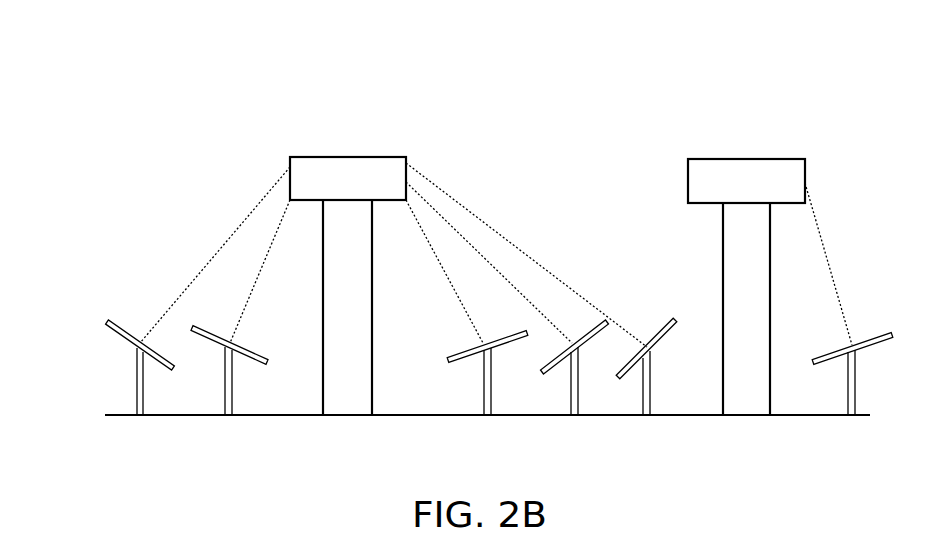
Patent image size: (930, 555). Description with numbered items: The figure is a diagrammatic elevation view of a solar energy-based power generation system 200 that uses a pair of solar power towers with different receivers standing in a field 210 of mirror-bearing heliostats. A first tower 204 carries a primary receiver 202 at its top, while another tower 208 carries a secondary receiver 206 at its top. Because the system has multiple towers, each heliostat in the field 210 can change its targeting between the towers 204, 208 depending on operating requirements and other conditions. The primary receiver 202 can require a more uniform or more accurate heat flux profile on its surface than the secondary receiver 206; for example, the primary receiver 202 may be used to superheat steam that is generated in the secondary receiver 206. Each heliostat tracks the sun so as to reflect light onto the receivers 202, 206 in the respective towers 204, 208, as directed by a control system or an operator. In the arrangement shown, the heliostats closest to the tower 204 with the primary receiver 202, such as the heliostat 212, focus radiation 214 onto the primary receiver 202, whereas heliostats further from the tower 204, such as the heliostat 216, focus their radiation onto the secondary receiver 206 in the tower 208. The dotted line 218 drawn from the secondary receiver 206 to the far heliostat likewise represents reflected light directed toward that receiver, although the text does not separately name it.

The solar energy-based power generation system 200 is at (205, 97).
The primary receiver 202 is at (369, 190).
The first tower 204 is at (374, 307).
The secondary receiver 206 is at (767, 192).
The tower 208 is at (737, 290).
The field of mirror-bearing heliostats 210 is at (147, 317).
The heliostat 212 is at (172, 372).
The radiation 214 is at (223, 243).
The heliostat 216 is at (822, 367).
The beam from second unit 218 is at (818, 230).